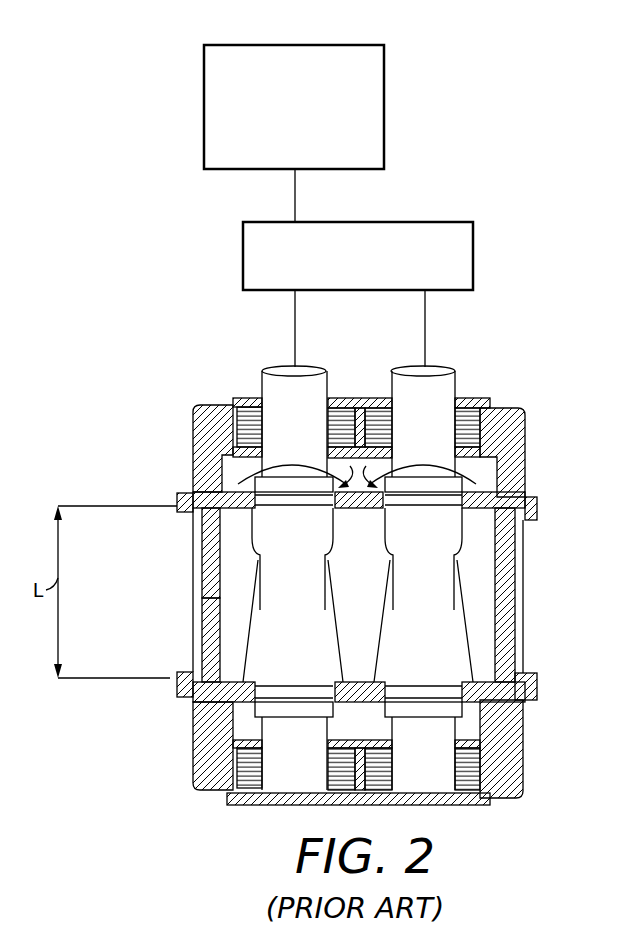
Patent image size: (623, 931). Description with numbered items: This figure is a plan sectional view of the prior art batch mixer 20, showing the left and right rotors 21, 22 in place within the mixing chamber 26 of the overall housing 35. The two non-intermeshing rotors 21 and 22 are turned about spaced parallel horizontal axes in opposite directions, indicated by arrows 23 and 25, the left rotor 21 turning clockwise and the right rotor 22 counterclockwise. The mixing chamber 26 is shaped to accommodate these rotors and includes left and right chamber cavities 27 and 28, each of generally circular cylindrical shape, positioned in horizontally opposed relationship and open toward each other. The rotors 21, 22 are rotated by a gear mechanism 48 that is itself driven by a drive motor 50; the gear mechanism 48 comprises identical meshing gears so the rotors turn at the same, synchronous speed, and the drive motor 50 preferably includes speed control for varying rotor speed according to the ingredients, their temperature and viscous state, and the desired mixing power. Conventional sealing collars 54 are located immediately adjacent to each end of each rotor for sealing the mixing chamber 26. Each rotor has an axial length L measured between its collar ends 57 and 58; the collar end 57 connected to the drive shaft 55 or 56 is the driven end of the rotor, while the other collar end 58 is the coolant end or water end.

The mixer 20 is at (163, 382).
The left rotor 21 is at (272, 560).
The right rotor 22 is at (452, 597).
The arrow 23 is at (230, 452).
The arrow 25 is at (503, 453).
The mixing chamber 26 is at (218, 562).
The left chamber cavity 27 is at (218, 633).
The right chamber cavity 28 is at (498, 627).
The housing 35 is at (536, 410).
The gear mechanism 48 is at (473, 255).
The drive motor 50 is at (384, 129).
The sealing collars 54 is at (240, 486).
The drive shaft 55 is at (287, 378).
The drive shaft 56 is at (452, 378).
The collar end 57 is at (252, 508).
The collar end 58 is at (257, 696).